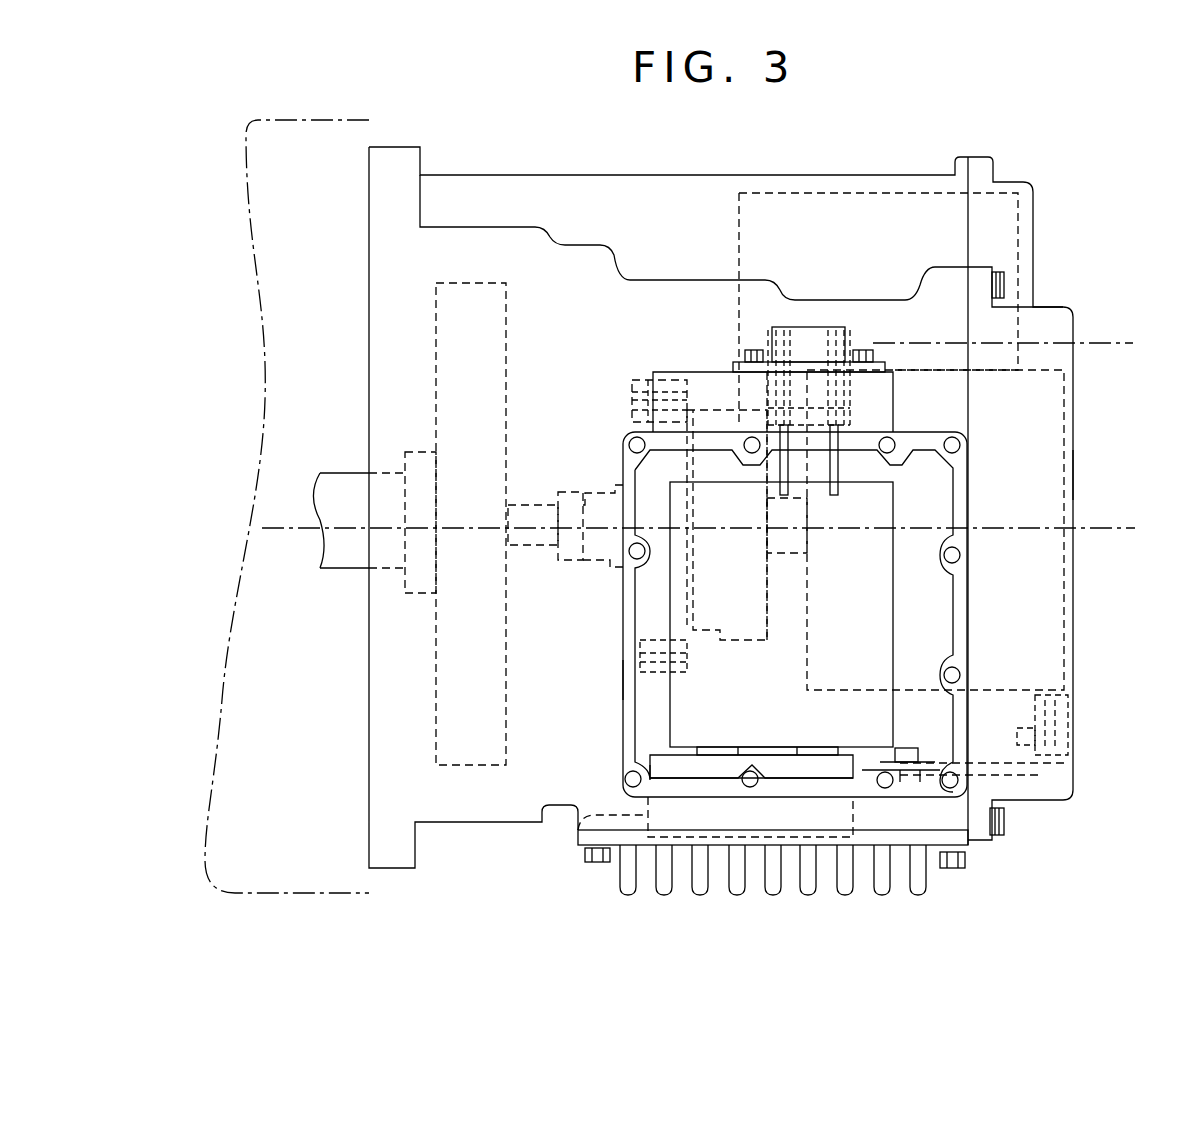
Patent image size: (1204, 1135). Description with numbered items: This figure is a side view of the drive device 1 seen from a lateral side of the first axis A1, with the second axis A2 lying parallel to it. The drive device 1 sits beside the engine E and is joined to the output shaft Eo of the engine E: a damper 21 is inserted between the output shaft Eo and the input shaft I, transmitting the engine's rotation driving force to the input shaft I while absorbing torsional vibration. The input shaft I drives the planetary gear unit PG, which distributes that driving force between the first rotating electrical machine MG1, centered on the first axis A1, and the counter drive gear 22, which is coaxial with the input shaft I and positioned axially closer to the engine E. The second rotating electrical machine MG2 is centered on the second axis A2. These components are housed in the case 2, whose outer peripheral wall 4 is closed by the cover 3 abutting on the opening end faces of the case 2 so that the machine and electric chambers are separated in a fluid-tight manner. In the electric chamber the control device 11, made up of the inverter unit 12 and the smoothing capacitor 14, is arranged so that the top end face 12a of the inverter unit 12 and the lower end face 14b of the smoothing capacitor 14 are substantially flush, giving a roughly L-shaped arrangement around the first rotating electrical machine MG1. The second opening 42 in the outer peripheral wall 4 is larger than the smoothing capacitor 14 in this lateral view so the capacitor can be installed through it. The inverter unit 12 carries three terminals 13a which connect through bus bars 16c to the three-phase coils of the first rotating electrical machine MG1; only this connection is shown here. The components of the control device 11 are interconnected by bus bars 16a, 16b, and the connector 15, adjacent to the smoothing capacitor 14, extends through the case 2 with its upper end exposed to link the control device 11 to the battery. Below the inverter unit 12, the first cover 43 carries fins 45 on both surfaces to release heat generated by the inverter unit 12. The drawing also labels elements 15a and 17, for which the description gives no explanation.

The drive device 1 is at (1108, 197).
The case 2 is at (467, 822).
The cover 3 is at (1075, 475).
The outer peripheral wall 4 is at (598, 180).
The control device 11 is at (735, 669).
The inverter unit 12 is at (575, 827).
The top end face 12a is at (658, 755).
The terminals 13a is at (862, 762).
The smoothing capacitor 14 is at (605, 592).
The lower end face 14b is at (708, 757).
The connector 15 is at (772, 340).
The connector bolts 15a is at (838, 327).
The bus bar 16a is at (832, 497).
The bus bar 16b is at (778, 752).
The bus bars 16c is at (1035, 777).
The connector 17 is at (1075, 718).
The damper 21 is at (436, 305).
The counter drive gear 22 is at (632, 397).
The second opening 42 is at (657, 690).
The first cover 43 is at (968, 840).
The fins 45 is at (810, 890).
The engine E is at (377, 133).
The output shaft Eo is at (338, 477).
The input shaft I is at (535, 505).
The planetary gear unit PG is at (740, 416).
The first axis A1 is at (721, 531).
The second axis A2 is at (1026, 346).
The first rotating electrical machine MG1 is at (1052, 660).
The second rotating electrical machine MG2 is at (1030, 266).